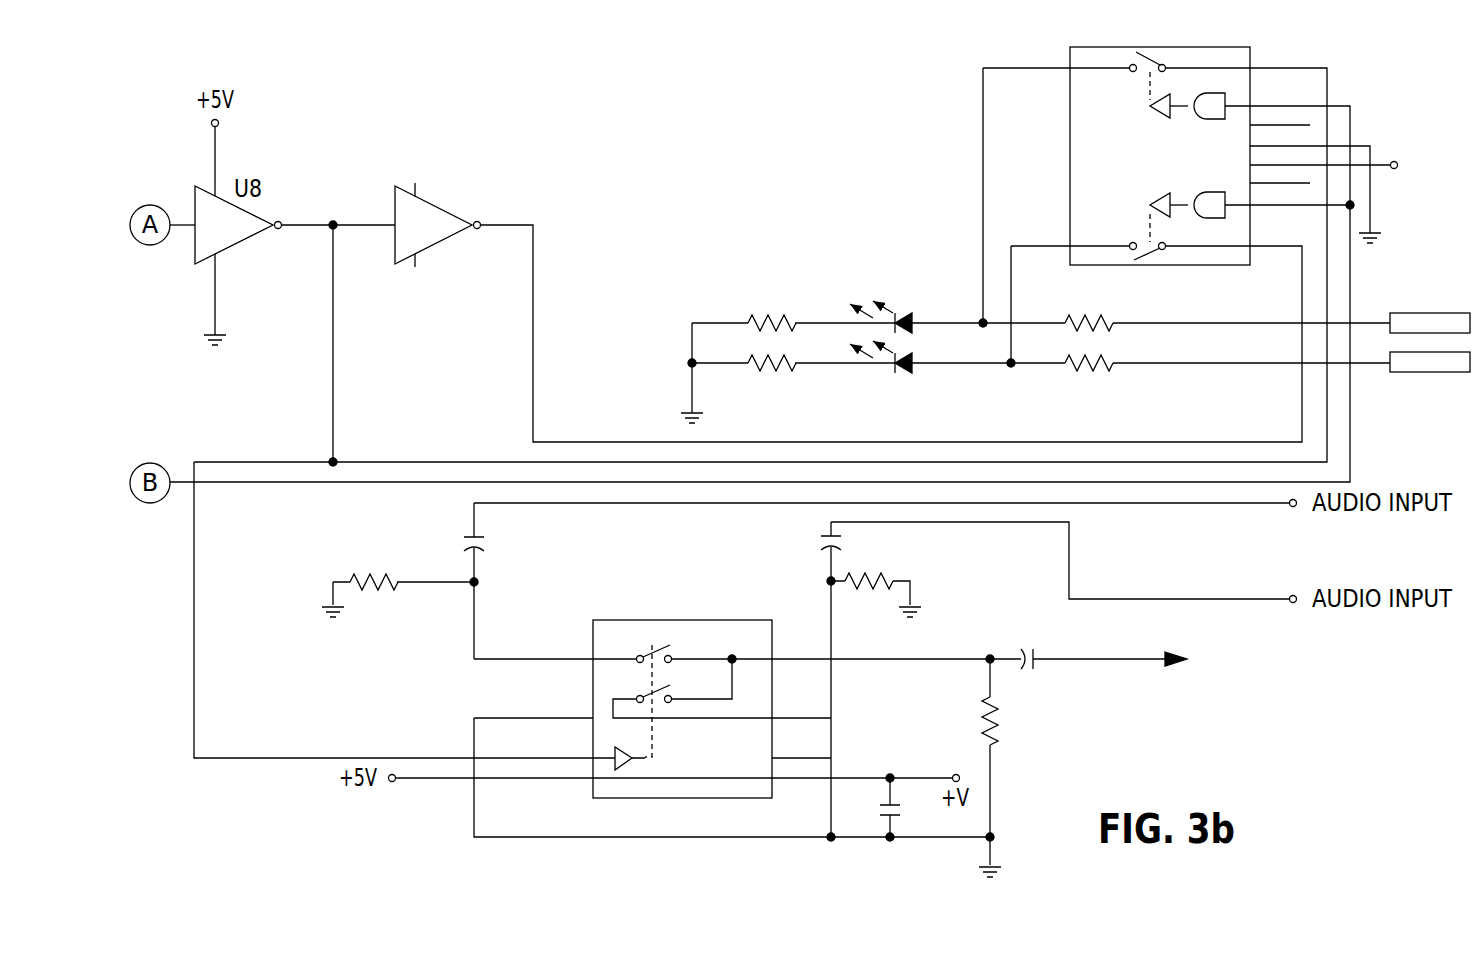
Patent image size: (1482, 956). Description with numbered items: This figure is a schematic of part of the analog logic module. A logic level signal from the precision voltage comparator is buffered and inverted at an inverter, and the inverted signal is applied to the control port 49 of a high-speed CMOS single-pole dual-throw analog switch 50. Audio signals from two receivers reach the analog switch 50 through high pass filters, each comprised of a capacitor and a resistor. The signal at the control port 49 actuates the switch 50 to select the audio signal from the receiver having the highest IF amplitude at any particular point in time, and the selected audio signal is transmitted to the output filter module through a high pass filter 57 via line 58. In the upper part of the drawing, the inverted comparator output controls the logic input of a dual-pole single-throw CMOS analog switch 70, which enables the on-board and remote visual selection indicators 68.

The dual-pole single-throw CMOS analog switch 70 is at (1235, 45).
The visual selection indicators 68 is at (850, 288).
The high-speed CMOS single-pole dual-throw analog switch 50 is at (732, 676).
The control port 49 is at (595, 757).
The high pass filter 57 is at (990, 655).
The line 58 is at (1102, 662).